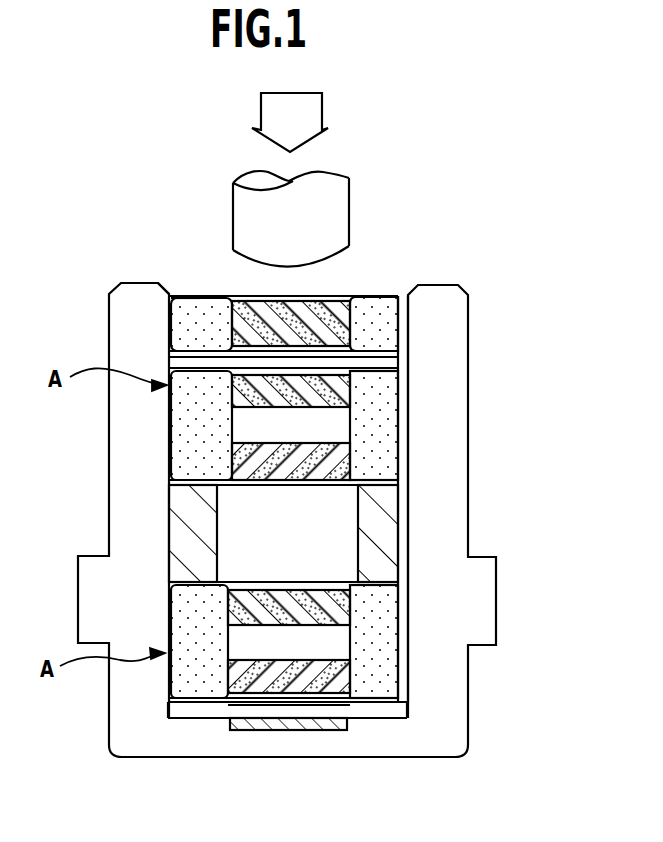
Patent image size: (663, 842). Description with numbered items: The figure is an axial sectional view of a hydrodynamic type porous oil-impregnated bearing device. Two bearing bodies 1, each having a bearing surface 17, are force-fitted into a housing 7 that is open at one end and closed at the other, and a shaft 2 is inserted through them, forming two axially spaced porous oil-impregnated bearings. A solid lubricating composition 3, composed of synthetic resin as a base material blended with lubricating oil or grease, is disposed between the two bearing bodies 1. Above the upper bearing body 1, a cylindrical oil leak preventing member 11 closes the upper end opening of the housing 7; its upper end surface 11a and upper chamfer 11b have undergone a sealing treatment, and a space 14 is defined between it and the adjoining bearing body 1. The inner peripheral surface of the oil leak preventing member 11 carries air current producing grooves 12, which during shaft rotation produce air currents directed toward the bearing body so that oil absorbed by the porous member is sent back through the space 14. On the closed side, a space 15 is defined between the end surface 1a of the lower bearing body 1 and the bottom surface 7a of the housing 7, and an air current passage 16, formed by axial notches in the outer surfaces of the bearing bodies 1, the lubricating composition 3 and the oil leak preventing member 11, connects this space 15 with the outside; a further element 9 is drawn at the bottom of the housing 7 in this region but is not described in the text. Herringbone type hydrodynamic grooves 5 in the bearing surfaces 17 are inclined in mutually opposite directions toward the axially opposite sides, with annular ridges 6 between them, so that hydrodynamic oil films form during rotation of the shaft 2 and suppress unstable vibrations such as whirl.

The bearing body 1 is at (390, 413).
The end surface of the bearing body 1a is at (200, 702).
The shaft 2 is at (237, 220).
The solid lubricating composition 3 is at (388, 527).
The hydrodynamic-pressure-generating grooves 5 is at (298, 695).
The annular ridges 6 is at (273, 687).
The housing 7 is at (127, 512).
The bottom surface of the housing 7a is at (372, 713).
The lead terminal 9 is at (292, 725).
The oil leak preventing member 11 is at (183, 328).
The upper end surface 11a is at (190, 295).
The upper chamfer 11b is at (173, 290).
The air current producing grooves 12 is at (338, 300).
The space 14 is at (395, 360).
The space 15 is at (177, 712).
The air current passage 16 is at (403, 320).
The bearing surface 17 is at (237, 432).